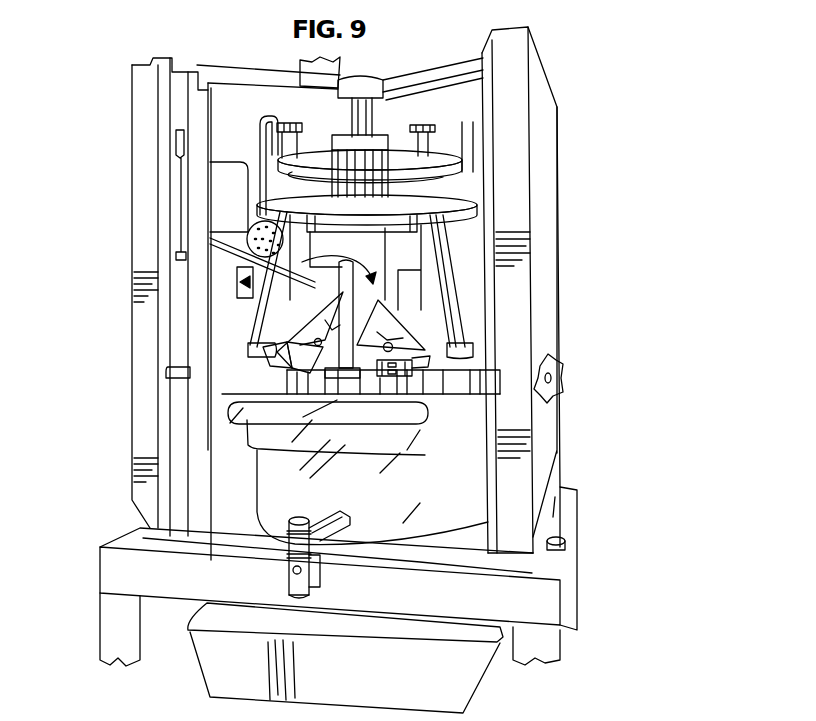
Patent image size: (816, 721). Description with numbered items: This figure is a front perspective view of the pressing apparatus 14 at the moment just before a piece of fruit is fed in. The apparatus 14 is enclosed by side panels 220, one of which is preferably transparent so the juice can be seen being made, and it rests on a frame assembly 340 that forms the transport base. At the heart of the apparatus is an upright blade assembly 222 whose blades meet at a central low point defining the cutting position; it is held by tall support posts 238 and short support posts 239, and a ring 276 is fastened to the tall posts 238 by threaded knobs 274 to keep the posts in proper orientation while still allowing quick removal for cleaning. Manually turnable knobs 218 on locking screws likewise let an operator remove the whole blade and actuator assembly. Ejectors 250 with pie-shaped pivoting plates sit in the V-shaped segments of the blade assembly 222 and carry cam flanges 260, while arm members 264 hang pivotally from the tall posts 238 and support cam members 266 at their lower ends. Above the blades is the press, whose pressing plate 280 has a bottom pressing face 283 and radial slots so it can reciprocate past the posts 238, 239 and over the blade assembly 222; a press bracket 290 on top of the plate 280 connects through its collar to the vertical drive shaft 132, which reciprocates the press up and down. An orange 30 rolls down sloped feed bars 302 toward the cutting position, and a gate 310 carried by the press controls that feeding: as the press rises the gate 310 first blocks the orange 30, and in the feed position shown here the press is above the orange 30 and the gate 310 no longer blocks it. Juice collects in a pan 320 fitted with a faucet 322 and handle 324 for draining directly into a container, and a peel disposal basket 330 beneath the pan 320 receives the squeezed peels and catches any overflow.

The pressing apparatus 14 is at (598, 248).
The orange 30 is at (247, 232).
The vertical drive shaft 132 is at (388, 132).
The manually turnable knob 218 is at (563, 375).
The side panel 220 is at (547, 158).
The upright blade assembly 222 is at (237, 280).
The tall support post 238 is at (300, 311).
The short support post 239 is at (337, 322).
The ejector 250 is at (430, 324).
The cam flange 260 is at (410, 378).
The arm member 264 is at (455, 292).
The cam member 266 is at (255, 352).
The threaded knob 274 is at (288, 118).
The ring 276 is at (450, 160).
The pressing plate 280 is at (470, 205).
The bottom pressing face 283 is at (450, 272).
The press bracket 290 is at (432, 126).
The feed bar 302 is at (235, 260).
The gate 310 is at (262, 137).
The pan 320 is at (368, 503).
The faucet 322 is at (283, 579).
The handle 324 is at (306, 522).
The peel disposal basket 330 is at (370, 688).
The frame assembly 340 is at (100, 627).